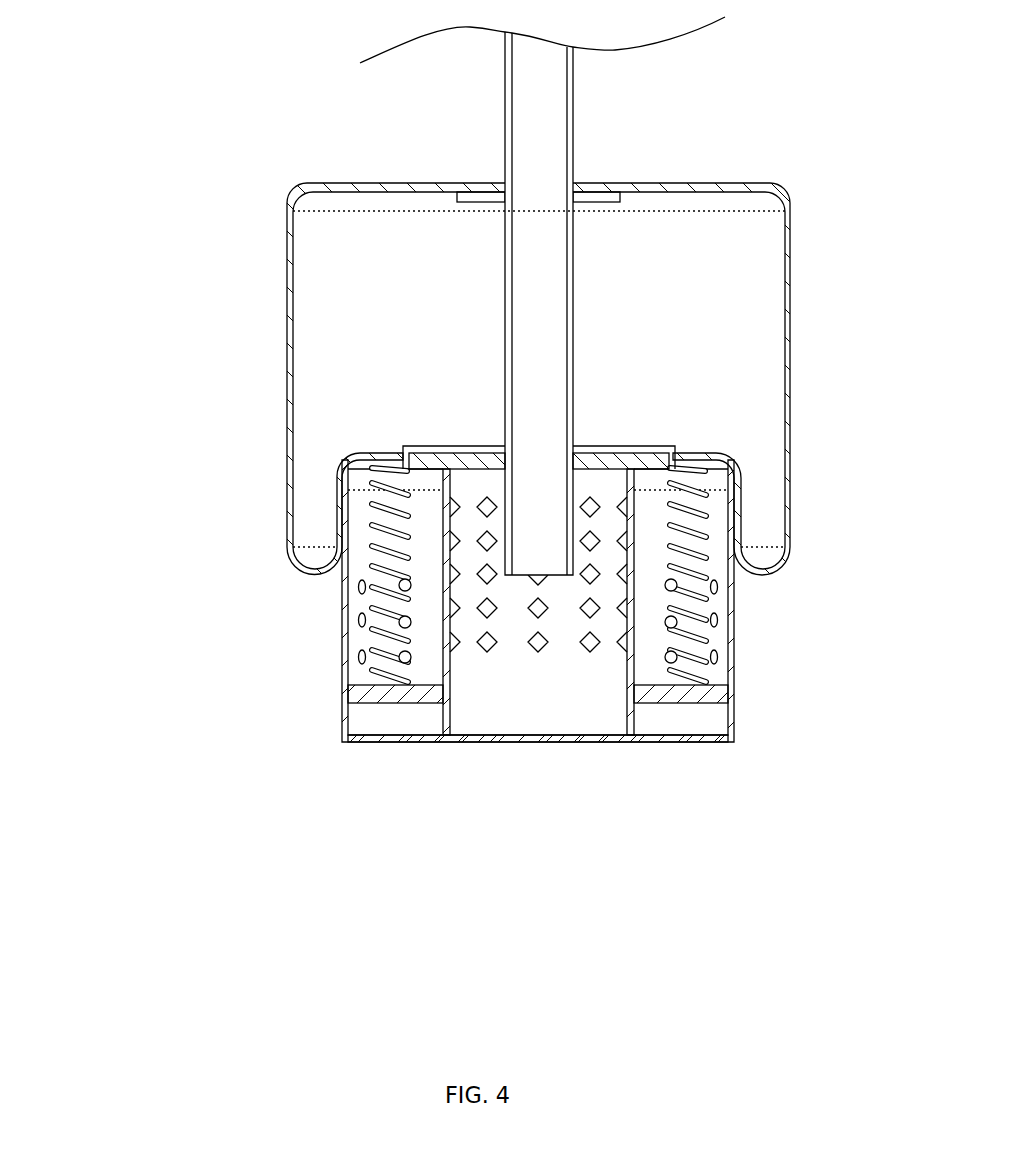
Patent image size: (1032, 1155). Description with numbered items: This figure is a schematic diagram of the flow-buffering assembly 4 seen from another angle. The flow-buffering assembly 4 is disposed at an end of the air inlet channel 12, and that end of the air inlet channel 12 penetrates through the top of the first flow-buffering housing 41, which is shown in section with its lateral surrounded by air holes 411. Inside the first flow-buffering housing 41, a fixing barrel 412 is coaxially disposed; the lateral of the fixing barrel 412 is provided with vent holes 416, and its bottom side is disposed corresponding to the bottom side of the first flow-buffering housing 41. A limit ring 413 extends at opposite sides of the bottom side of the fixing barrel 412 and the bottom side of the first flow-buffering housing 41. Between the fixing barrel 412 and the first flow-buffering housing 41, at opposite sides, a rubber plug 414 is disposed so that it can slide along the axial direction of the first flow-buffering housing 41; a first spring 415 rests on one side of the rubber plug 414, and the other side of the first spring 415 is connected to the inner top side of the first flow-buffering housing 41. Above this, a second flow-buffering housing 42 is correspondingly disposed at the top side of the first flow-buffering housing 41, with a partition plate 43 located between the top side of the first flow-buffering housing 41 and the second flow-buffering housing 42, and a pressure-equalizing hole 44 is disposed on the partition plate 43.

The flow-buffering assembly 4 is at (175, 345).
The air inlet channel 12 is at (508, 250).
The first flow-buffering housing 41 is at (735, 700).
The air holes 411 is at (715, 622).
The fixing barrel 412 is at (513, 720).
The limit ring 413 is at (367, 742).
The rubber plug 414 is at (670, 697).
The first spring 415 is at (385, 617).
The vent holes 416 is at (540, 650).
The second flow-buffering housing 42 is at (785, 400).
The partition plate 43 is at (635, 460).
The pressure-equalizing hole 44 is at (612, 453).